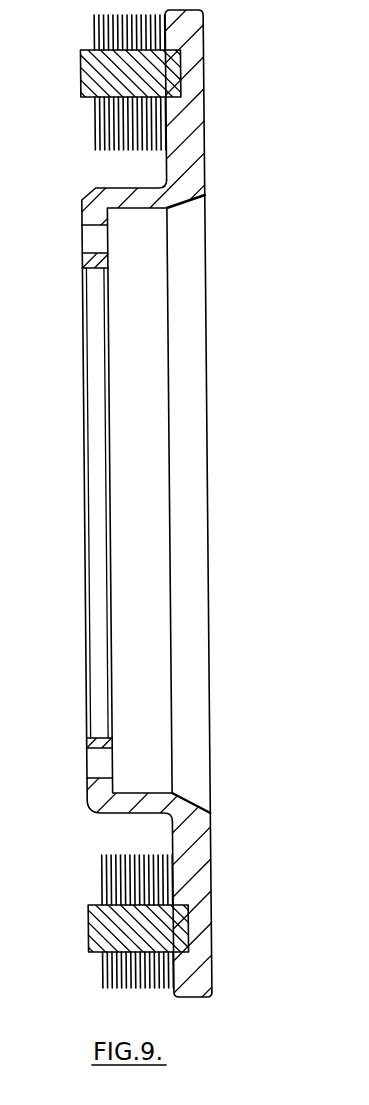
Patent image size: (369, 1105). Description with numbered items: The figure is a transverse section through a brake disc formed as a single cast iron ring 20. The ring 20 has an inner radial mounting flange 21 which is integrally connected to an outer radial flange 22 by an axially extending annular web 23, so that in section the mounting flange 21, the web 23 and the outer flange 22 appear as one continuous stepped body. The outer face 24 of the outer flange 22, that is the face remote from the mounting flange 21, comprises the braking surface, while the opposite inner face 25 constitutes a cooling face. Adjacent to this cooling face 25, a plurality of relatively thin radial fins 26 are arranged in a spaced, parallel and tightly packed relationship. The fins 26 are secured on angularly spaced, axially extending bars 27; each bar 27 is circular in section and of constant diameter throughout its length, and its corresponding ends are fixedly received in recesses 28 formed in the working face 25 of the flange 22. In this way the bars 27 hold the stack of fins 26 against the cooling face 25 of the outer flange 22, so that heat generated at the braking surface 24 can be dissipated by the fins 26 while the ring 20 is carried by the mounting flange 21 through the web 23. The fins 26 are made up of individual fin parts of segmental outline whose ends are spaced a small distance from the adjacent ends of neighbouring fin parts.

The cast iron ring 20 is at (209, 838).
The inner radial mounting flange 21 is at (85, 258).
The outer radial flange 22 is at (192, 158).
The axially extending annular web 23 is at (148, 203).
The outer face 24 is at (212, 941).
The inner face 25 is at (175, 990).
The radial fins 26 is at (103, 988).
The axially extending bars 27 is at (97, 65).
The recesses 28 is at (180, 73).